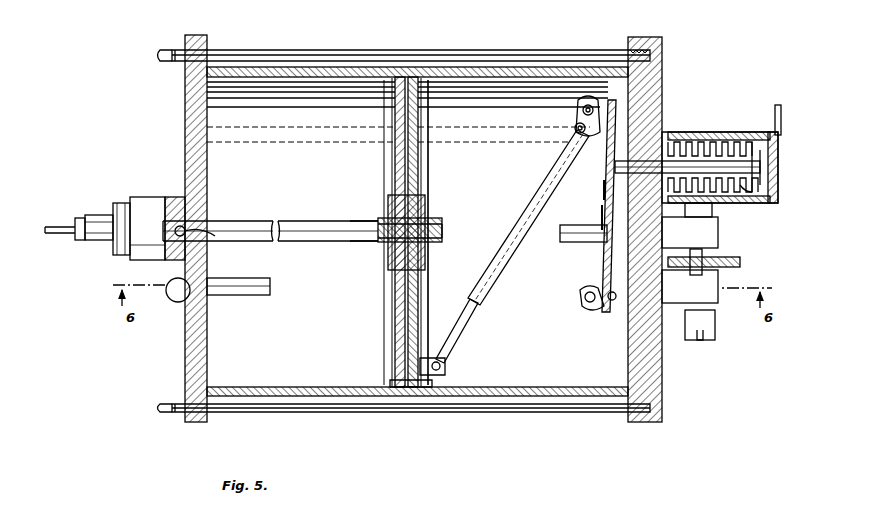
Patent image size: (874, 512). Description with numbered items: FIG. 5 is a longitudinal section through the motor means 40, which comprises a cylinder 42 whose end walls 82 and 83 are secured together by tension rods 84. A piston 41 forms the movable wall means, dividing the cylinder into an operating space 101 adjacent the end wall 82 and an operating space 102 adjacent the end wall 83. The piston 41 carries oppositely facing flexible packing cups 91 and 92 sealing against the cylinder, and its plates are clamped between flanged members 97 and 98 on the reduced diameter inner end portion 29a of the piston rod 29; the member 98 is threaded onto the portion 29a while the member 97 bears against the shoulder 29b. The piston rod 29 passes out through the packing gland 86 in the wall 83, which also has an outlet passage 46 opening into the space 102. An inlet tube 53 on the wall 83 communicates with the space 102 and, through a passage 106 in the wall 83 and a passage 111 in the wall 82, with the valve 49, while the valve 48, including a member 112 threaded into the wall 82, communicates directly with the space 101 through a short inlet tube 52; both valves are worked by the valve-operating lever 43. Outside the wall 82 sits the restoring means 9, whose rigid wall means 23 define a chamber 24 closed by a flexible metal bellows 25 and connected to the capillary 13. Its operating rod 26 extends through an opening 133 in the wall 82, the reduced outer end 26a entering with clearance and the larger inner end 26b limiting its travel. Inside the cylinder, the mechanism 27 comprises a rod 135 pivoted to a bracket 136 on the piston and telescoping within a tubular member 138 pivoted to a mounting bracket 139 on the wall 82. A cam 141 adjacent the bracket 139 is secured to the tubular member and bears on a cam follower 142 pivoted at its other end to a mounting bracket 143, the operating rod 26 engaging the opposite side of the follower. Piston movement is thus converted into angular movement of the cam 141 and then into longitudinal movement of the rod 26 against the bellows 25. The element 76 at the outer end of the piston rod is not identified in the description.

The restoring means 9 is at (712, 128).
The capillary 13 is at (783, 112).
The rigid wall means 23 is at (737, 132).
The chamber 24 is at (750, 132).
The flexible metal bellows 25 is at (742, 190).
The operating rod 26 is at (620, 160).
The outer end of operating rod 26a is at (606, 188).
The inner end of operating rod 26b is at (688, 158).
The lever mechanism 27 is at (512, 246).
The piston rod 29 is at (101, 215).
The reduced diameter inner end portion 29a is at (368, 245).
The shoulder 29b is at (355, 221).
The motor means 40 is at (440, 66).
The piston 41 is at (393, 163).
The cylinder 42 is at (352, 95).
The valve-operating lever 43 is at (744, 262).
The outlet passage 46 is at (220, 235).
The valve 48 is at (722, 236).
The valve 49 is at (722, 286).
The short inlet tube 52 is at (574, 243).
The inlet tube 53 is at (240, 288).
The adjusting screw 76 is at (68, 233).
The end wall 82 is at (672, 66).
The end wall 83 is at (192, 112).
The tension rods 84 is at (527, 55).
The packing gland 86 is at (127, 200).
The flexible packing cup 91 is at (396, 330).
The flexible packing cup 92 is at (430, 176).
The flanged member 97 is at (392, 270).
The flanged member 98 is at (428, 265).
The operating space 101 is at (532, 349).
The operating space 102 is at (267, 169).
The passage 106 is at (176, 302).
The passage 111 is at (616, 325).
The valve member 112 is at (694, 231).
The opening 133 is at (606, 216).
The rod 135 is at (476, 318).
The bracket 136 is at (450, 366).
The tubular member 138 is at (506, 233).
The mounting bracket 139 is at (590, 96).
The cam 141 is at (583, 113).
The cam follower 142 is at (602, 138).
The mounting bracket 143 is at (592, 310).